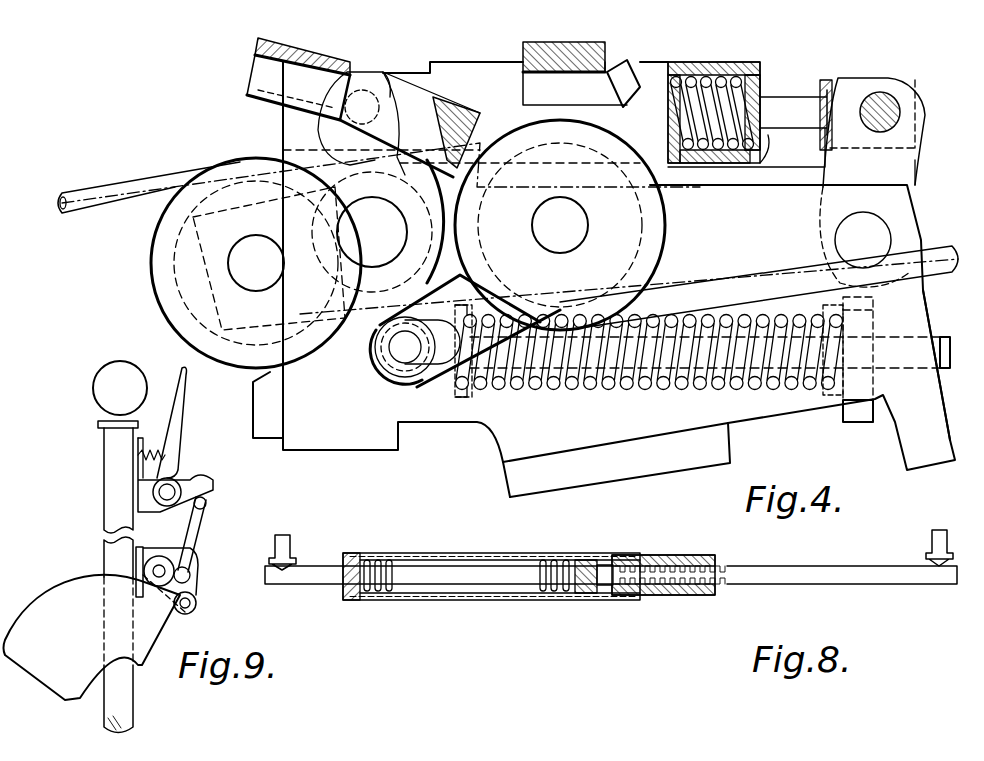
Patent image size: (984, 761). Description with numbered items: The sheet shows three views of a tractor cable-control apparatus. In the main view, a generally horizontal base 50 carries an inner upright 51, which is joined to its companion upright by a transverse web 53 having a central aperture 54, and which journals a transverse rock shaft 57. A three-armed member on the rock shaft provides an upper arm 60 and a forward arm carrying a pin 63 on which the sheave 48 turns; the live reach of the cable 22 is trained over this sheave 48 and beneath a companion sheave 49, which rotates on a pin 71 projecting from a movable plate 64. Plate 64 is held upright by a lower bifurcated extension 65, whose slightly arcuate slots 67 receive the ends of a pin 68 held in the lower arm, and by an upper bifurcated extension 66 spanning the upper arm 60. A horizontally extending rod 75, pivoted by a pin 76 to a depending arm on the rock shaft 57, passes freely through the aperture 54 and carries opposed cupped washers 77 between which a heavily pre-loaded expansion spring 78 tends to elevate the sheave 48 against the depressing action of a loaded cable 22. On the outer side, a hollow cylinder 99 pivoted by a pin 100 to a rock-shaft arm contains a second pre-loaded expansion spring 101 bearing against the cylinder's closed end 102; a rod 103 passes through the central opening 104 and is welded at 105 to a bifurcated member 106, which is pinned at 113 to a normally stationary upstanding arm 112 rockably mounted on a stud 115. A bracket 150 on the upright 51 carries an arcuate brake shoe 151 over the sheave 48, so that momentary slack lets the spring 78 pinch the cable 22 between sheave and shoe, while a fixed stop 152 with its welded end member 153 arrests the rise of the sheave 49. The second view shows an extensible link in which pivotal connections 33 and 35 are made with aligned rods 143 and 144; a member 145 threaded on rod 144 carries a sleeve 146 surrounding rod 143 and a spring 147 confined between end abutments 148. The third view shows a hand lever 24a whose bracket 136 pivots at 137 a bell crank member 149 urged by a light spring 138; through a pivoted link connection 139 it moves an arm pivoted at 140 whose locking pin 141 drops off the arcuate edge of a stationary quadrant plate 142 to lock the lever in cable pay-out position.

In FIG. 4, the cable 22 is at (105, 185).
In FIG. 9, the hand lever 24a is at (118, 508).
In FIG. 8, the pivotal connection 33 is at (287, 548).
In FIG. 8, the pivotal connection 35 is at (930, 542).
In FIG. 4, the sheave 48 is at (151, 272).
In FIG. 4, the companion sheave 49 is at (666, 222).
In FIG. 4, the base 50 is at (597, 437).
In FIG. 4, the inner upright 51 is at (920, 307).
In FIG. 4, the transverse web 53 is at (868, 375).
In FIG. 4, the aperture 54 is at (855, 330).
In FIG. 4, the rock shaft 57 is at (368, 216).
In FIG. 4, the upper arm 60 is at (413, 95).
In FIG. 4, the pin 63 is at (258, 250).
In FIG. 4, the movable plate 64 is at (500, 110).
In FIG. 4, the lower bifurcated extension 65 is at (455, 330).
In FIG. 4, the upper bifurcated extension 66 is at (447, 115).
In FIG. 4, the slots 67 is at (440, 357).
In FIG. 4, the pin 68 is at (395, 370).
In FIG. 4, the pin 71 is at (570, 207).
In FIG. 4, the rod 75 is at (951, 352).
In FIG. 4, the pin 76 is at (388, 352).
In FIG. 4, the cupped washers 77 is at (463, 383).
In FIG. 4, the expansion spring 78 is at (617, 387).
In FIG. 4, the cylinder 99 is at (683, 70).
In FIG. 4, the pin 100 is at (325, 185).
In FIG. 4, the expansion spring 101 is at (728, 75).
In FIG. 4, the closed end 102 is at (765, 85).
In FIG. 4, the rod 103 is at (775, 118).
In FIG. 4, the central opening 104 is at (778, 145).
In FIG. 4, the weld 105 is at (823, 90).
In FIG. 4, the bifurcated member 106 is at (845, 85).
In FIG. 4, the upstanding arm 112 is at (915, 166).
In FIG. 4, the pin 113 is at (895, 112).
In FIG. 4, the stud 115 is at (848, 228).
In FIG. 9, the bracket 136 is at (98, 478).
In FIG. 9, the pivot 137 is at (180, 484).
In FIG. 9, the light spring 138 is at (148, 452).
In FIG. 9, the pivoted link connection 139 is at (193, 540).
In FIG. 9, the pivot 140 is at (160, 556).
In FIG. 9, the locking pin 141 is at (197, 603).
In FIG. 9, the quadrant plate 142 is at (58, 683).
In FIG. 8, the rod 143 is at (322, 582).
In FIG. 8, the rod 144 is at (840, 578).
In FIG. 8, the member 145 is at (670, 557).
In FIG. 8, the sleeve 146 is at (505, 555).
In FIG. 8, the spring 147 is at (532, 598).
In FIG. 8, the end abutments 148 is at (360, 598).
In FIG. 9, the bell crank member 149 is at (182, 432).
In FIG. 4, the bracket 150 is at (287, 50).
In FIG. 4, the brake shoe 151 is at (258, 70).
In FIG. 4, the fixed stop 152 is at (575, 50).
In FIG. 4, the end member 153 is at (625, 75).